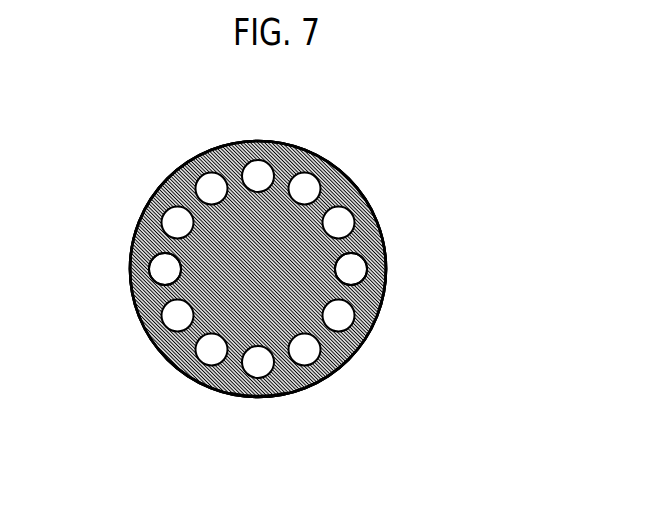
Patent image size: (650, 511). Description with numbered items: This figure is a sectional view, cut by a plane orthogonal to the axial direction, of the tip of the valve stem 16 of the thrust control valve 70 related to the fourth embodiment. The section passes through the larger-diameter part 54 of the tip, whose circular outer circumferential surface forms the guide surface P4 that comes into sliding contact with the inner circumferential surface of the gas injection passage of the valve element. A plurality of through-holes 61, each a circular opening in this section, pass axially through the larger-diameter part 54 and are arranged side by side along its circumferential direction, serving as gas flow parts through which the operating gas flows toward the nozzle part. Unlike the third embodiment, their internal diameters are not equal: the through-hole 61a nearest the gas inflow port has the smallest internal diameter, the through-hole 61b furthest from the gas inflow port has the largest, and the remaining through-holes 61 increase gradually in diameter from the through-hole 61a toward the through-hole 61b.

The thrust control valve 70 is at (374, 150).
The valve stem 16 is at (156, 360).
The larger-diameter part 54 is at (386, 262).
The through-holes 61 is at (345, 322).
The through-hole having a smallest internal diameter 61a is at (160, 270).
The through-hole having a largest internal diameter 61b is at (355, 275).
The guide surface P4 is at (255, 398).